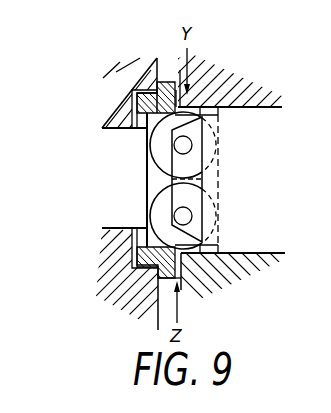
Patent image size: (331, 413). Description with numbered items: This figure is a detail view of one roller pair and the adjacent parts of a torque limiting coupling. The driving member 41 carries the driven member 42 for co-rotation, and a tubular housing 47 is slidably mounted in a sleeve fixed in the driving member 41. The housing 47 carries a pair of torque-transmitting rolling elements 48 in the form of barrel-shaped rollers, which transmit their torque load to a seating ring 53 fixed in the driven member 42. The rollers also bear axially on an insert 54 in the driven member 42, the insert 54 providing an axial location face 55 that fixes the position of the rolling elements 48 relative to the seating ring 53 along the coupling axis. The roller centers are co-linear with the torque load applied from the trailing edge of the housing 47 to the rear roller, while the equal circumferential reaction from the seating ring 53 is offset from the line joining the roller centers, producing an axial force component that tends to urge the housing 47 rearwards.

The driving member 41 is at (224, 79).
The driven member 42 is at (122, 270).
The tubular housing 47 is at (247, 180).
The torque-transmitting rolling elements 48 is at (208, 253).
The seating ring 53 is at (140, 100).
The insert 54 is at (143, 180).
The axial location face 55 is at (148, 189).